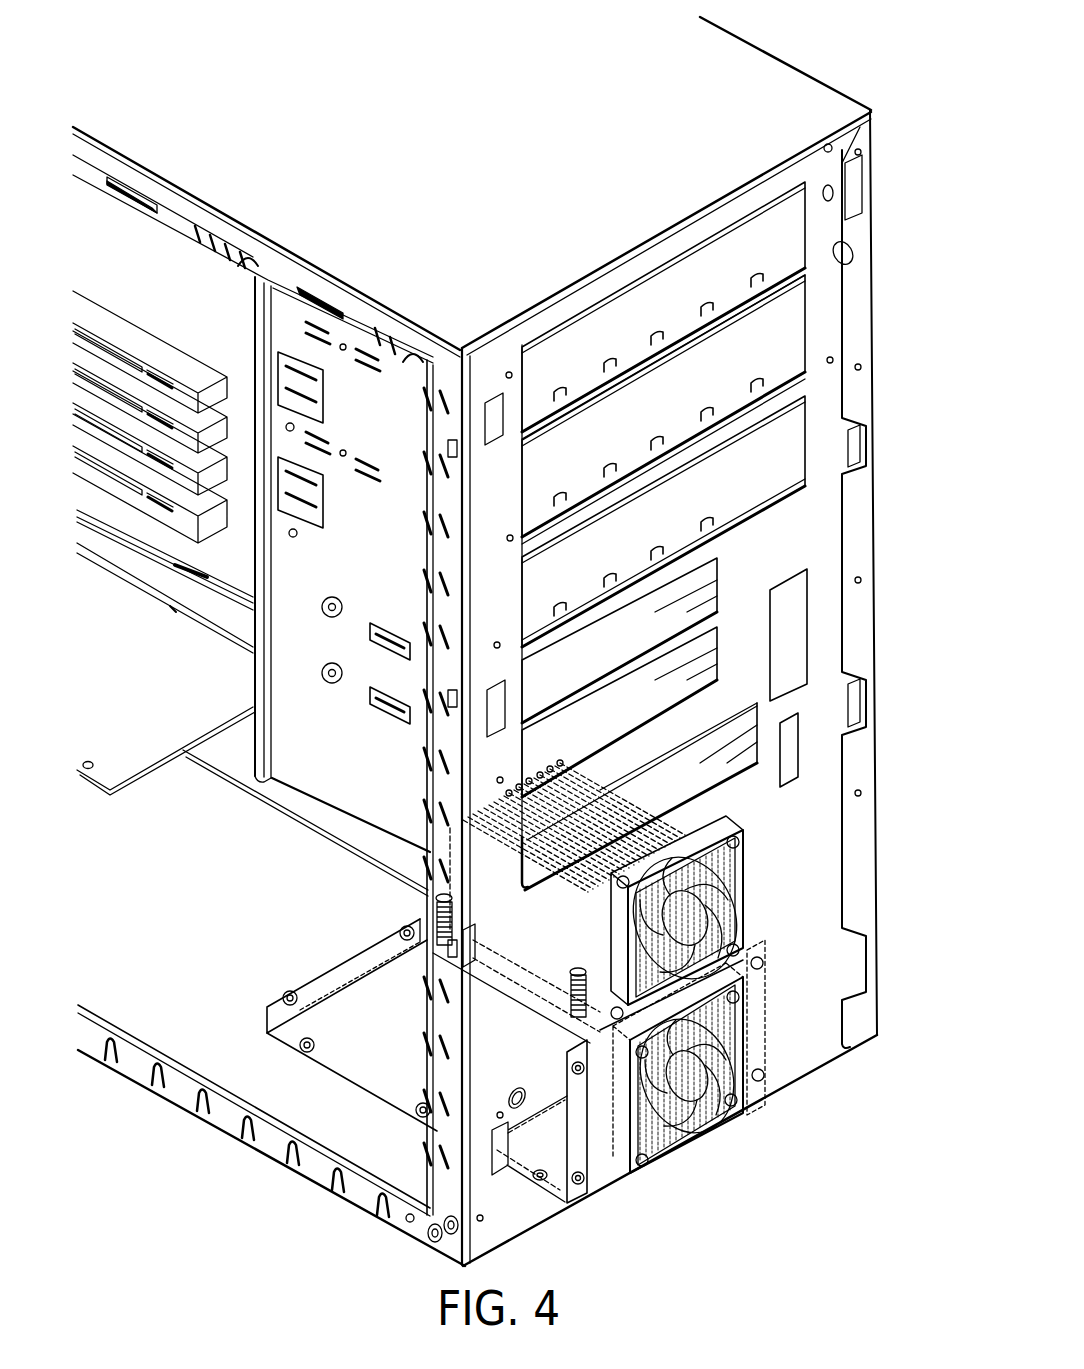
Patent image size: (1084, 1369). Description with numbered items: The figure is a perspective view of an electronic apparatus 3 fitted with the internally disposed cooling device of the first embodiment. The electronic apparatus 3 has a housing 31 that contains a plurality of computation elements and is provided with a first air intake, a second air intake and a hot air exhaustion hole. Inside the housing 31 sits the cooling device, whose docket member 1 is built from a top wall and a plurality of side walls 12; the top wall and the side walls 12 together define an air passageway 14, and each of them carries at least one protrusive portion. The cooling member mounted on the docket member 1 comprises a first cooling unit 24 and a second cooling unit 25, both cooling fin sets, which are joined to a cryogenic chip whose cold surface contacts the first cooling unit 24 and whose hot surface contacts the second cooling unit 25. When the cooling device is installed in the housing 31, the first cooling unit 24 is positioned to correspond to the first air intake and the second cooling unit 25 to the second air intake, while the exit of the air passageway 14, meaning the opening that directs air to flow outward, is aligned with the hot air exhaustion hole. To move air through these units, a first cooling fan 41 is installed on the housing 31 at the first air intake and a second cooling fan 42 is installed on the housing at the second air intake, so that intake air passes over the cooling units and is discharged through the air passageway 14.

The electronic apparatus 3 is at (787, 63).
The housing 31 is at (820, 712).
The docket member 1 is at (327, 975).
The side walls 12 is at (388, 1025).
The first cooling unit 24 is at (673, 820).
The first cooling fan 41 is at (747, 898).
The second cooling fan 42 is at (687, 1097).
The second cooling unit 25 is at (665, 1163).
The air passageway 14 is at (602, 1143).